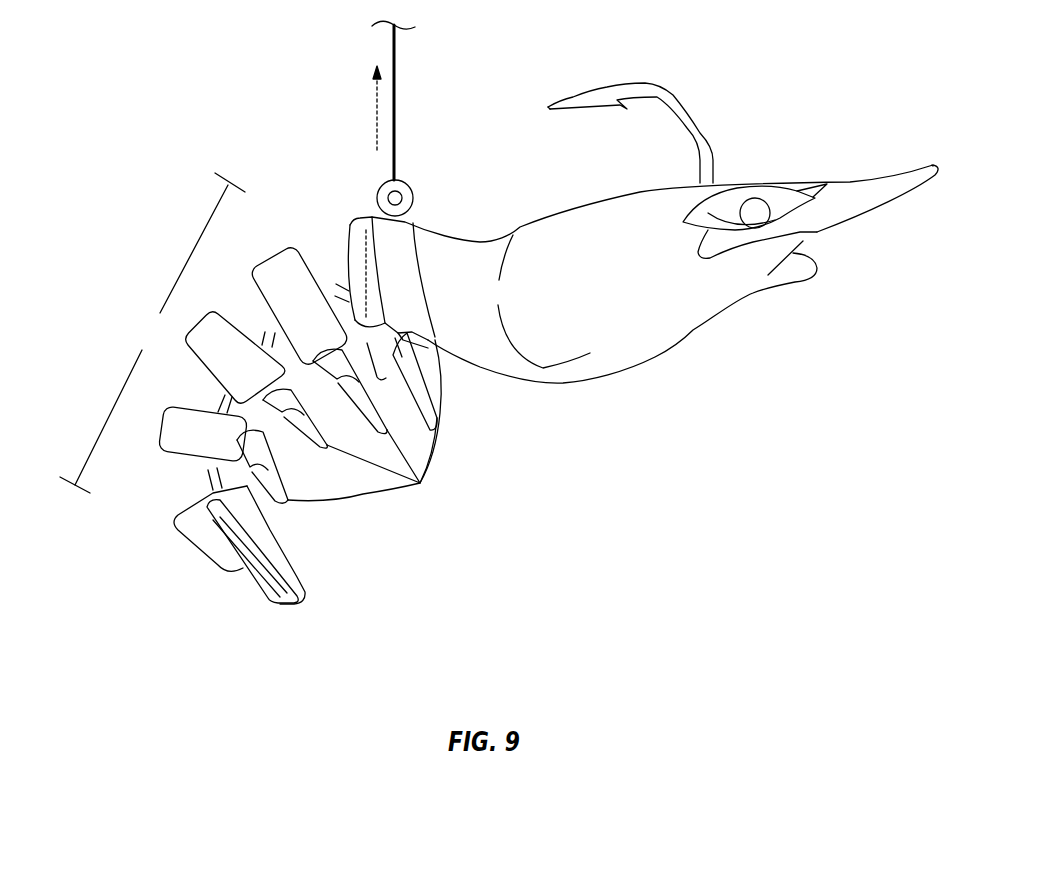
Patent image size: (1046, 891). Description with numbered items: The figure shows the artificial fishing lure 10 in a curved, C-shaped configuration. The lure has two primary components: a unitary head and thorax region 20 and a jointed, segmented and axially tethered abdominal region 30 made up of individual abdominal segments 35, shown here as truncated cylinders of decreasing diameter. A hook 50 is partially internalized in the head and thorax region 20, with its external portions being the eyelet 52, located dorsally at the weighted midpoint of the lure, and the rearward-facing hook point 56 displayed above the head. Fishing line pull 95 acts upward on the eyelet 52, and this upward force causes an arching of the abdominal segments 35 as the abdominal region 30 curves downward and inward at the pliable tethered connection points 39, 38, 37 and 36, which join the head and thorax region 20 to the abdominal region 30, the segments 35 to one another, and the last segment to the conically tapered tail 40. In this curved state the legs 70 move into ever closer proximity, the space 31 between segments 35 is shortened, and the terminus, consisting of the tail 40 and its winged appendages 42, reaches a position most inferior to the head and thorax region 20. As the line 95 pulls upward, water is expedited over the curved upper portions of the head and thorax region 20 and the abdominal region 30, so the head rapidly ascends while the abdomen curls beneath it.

The artificial fishing lure 10 is at (797, 108).
The head and thorax region 20 is at (597, 308).
The abdominal region 30 is at (152, 333).
The space 31 is at (337, 429).
The abdominal segments 35 is at (312, 317).
The tethered connection point 36 is at (208, 473).
The tethered connection point 37 is at (222, 399).
The tethered connection point 38 is at (261, 330).
The tethered connection point 39 is at (337, 282).
The tail 40 is at (263, 522).
The winged appendages 42 is at (253, 577).
The hook 50 is at (713, 140).
The eyelet 52 is at (413, 200).
The hook point 56 is at (546, 105).
The legs 70 is at (373, 424).
The fishing line pull 95 is at (396, 122).